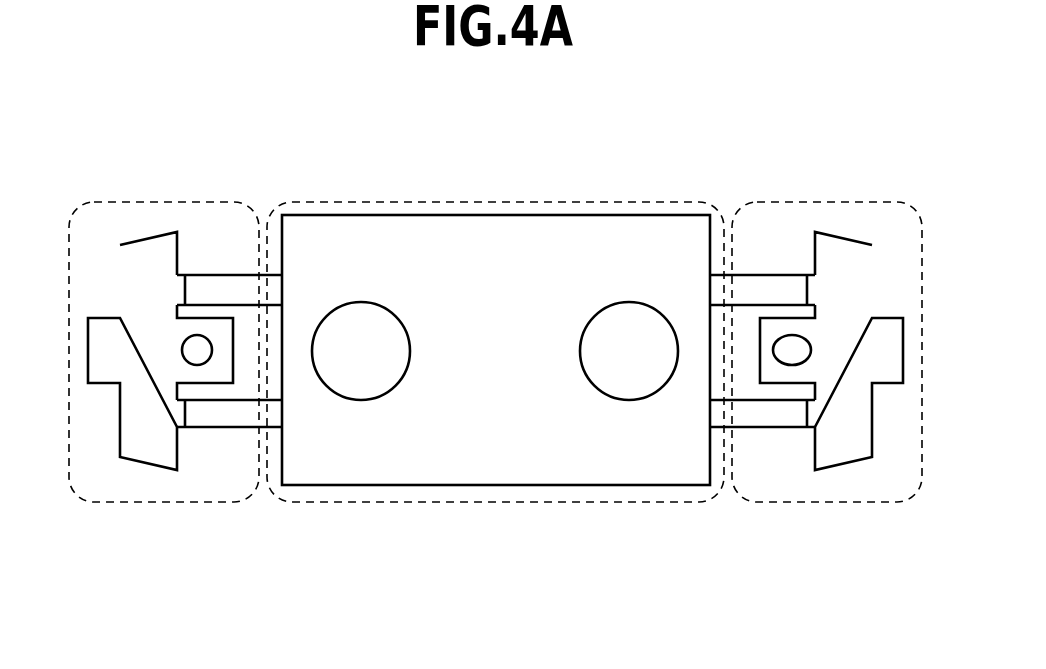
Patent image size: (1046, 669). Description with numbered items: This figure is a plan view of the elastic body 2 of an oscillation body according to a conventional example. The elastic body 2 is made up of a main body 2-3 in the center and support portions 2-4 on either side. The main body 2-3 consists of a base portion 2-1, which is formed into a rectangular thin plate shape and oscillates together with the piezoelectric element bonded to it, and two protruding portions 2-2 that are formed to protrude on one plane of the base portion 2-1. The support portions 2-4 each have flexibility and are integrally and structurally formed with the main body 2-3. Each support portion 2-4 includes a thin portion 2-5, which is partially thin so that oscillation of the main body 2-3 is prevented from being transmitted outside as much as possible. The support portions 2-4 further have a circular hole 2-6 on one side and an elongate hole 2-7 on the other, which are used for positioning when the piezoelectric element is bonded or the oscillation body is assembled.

The elastic body 2 is at (783, 76).
The base portion 2-1 is at (490, 423).
The protruding portions 2-2 is at (358, 383).
The main body 2-3 is at (500, 202).
The support portions 2-4 is at (120, 202).
The thin portion 2-5 is at (219, 287).
The circular hole 2-6 is at (182, 352).
The elongate hole 2-7 is at (811, 352).